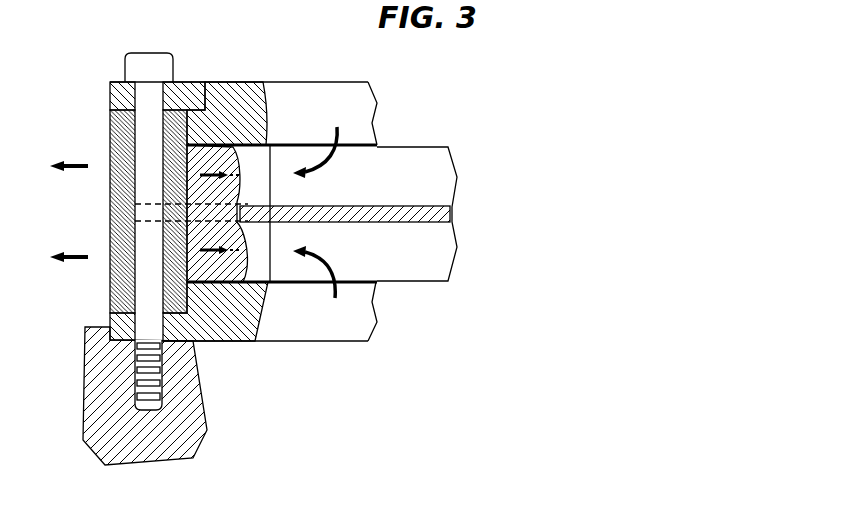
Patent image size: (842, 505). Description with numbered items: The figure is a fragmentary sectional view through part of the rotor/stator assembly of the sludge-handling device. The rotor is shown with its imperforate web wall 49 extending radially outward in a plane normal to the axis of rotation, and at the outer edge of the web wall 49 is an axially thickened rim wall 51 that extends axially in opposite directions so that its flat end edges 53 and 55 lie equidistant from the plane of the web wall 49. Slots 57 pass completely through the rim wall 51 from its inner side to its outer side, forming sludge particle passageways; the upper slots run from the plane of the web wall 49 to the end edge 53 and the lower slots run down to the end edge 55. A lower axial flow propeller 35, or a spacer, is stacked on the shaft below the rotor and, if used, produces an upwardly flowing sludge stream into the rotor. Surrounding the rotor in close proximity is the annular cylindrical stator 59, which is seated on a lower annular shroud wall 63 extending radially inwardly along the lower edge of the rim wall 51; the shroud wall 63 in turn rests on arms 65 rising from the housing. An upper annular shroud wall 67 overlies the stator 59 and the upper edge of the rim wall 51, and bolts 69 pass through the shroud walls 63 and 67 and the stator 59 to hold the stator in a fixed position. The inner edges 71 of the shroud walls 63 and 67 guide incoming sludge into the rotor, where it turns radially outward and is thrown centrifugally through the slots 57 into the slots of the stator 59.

The lower axial flow propeller 35 is at (450, 215).
The web wall 49 is at (433, 205).
The rim wall 51 is at (202, 163).
The end edge 53 is at (204, 100).
The end edge 55 is at (213, 303).
The slots 57 is at (262, 192).
The stator 59 is at (110, 133).
The lower annular shroud wall 63 is at (228, 325).
The arms 65 is at (157, 450).
The upper annular shroud wall 67 is at (236, 100).
The bolts 69 is at (112, 180).
The inner edges 71 is at (260, 100).